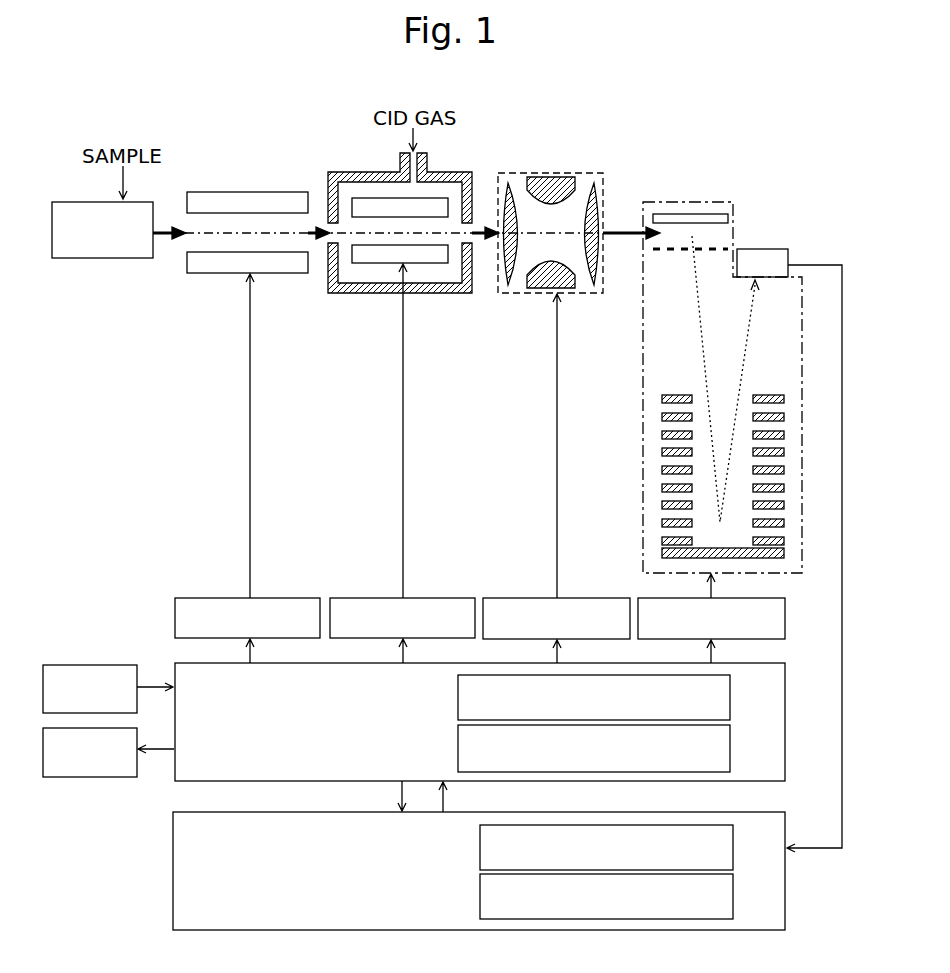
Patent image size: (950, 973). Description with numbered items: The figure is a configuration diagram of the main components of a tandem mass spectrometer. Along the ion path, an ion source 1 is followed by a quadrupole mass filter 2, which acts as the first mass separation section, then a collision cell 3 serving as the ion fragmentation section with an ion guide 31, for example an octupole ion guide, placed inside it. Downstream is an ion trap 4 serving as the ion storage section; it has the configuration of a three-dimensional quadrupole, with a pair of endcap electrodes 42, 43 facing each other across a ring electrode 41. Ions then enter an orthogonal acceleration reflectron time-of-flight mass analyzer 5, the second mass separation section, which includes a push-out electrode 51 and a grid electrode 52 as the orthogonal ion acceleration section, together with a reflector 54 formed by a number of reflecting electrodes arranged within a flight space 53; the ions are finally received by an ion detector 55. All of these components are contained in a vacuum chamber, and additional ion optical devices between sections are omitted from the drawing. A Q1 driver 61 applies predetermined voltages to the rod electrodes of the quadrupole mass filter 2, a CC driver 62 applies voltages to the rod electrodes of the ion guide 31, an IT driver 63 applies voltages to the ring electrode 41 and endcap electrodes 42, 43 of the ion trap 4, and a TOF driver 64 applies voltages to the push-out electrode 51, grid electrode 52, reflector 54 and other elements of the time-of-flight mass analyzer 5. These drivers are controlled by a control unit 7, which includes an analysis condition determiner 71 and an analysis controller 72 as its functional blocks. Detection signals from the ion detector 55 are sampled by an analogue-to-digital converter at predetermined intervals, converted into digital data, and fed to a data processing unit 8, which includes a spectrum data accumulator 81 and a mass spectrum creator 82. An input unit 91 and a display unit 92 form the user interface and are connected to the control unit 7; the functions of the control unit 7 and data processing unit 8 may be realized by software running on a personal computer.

The ion source 1 is at (77, 201).
The quadrupole mass filter 2 is at (222, 191).
The collision cell 3 is at (350, 171).
The ion guide 31 is at (383, 197).
The ion trap 4 is at (520, 172).
The ring electrode 41 is at (556, 177).
The endcap electrode 42 is at (507, 286).
The endcap electrode 43 is at (595, 286).
The time-of-flight mass analyzer 5 is at (734, 222).
The push-out electrode 51 is at (677, 213).
The grid electrode 52 is at (706, 247).
The flight space 53 is at (660, 379).
The reflector 54 is at (656, 456).
The ion detector 55 is at (789, 251).
The Q1 driver 61 is at (200, 597).
The CC driver 62 is at (363, 597).
The IT driver 63 is at (513, 597).
The TOF driver 64 is at (787, 616).
The control unit 7 is at (787, 696).
The analysis condition determiner 71 is at (742, 679).
The analysis controller 72 is at (743, 729).
The data processing unit 8 is at (787, 826).
The spectrum data accumulator 81 is at (735, 840).
The mass spectrum creator 82 is at (735, 888).
The input unit 91 is at (77, 663).
The display unit 92 is at (80, 778).